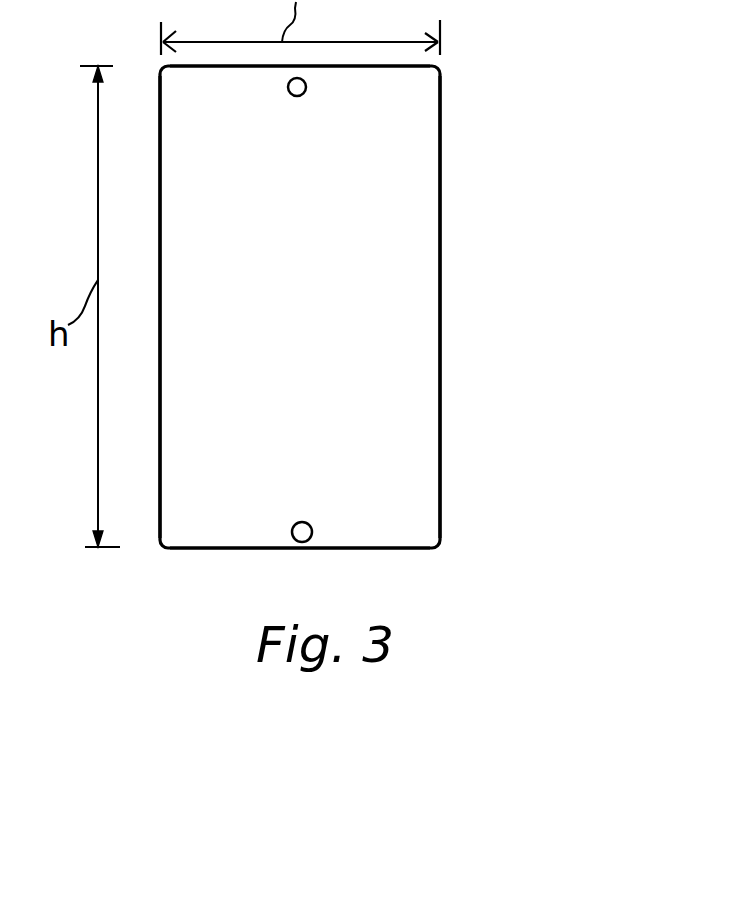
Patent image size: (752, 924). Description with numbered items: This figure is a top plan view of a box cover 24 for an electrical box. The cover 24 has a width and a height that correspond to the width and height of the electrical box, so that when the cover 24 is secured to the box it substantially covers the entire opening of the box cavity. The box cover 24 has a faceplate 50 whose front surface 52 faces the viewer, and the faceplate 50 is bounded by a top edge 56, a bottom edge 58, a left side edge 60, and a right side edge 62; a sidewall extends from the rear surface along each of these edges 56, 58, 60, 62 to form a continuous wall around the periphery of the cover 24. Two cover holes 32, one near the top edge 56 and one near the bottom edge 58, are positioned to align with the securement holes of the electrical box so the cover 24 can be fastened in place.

The box cover 24 is at (500, 212).
The cover holes 32 is at (306, 82).
The faceplate 50 is at (390, 372).
The front surface 52 is at (312, 300).
The top edge 56 is at (415, 68).
The bottom edge 58 is at (415, 550).
The left side edge 60 is at (160, 497).
The right side edge 62 is at (442, 487).